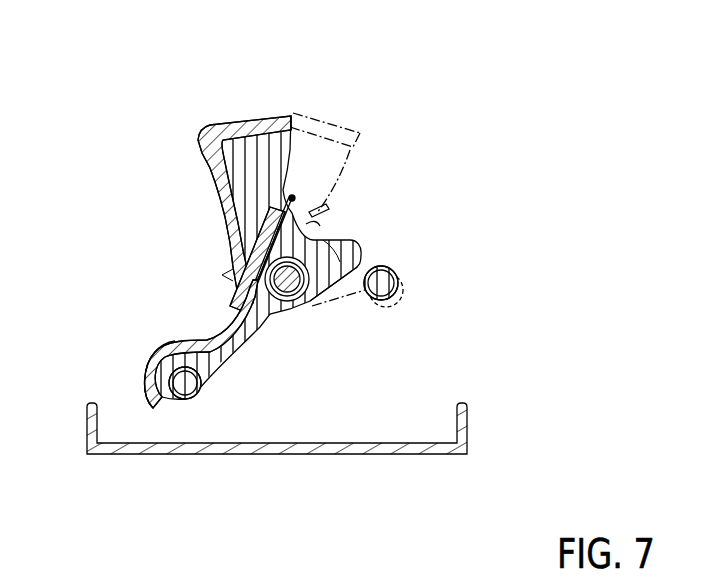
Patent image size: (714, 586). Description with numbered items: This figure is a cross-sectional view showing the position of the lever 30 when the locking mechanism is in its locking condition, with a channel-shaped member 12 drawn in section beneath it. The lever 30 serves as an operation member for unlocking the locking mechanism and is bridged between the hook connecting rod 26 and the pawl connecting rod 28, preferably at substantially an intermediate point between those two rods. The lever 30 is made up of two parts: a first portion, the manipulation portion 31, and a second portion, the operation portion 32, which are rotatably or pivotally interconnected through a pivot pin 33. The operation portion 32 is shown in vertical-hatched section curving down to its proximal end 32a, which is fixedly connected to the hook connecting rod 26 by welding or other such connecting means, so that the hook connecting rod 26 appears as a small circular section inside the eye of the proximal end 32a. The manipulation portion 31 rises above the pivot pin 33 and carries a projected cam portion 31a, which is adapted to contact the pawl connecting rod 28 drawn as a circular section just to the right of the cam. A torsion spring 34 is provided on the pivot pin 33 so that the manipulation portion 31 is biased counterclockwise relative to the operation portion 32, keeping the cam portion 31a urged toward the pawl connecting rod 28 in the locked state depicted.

The base frame 12 is at (266, 455).
The hook connecting rod 26 is at (181, 400).
The pawl connecting rod 28 is at (397, 278).
The lever 30 is at (245, 212).
The manipulation portion 31 is at (322, 162).
The projected cam portion 31a is at (345, 238).
The operation portion 32 is at (199, 331).
The proximal end 32a is at (145, 376).
The pivot pin 33 is at (282, 302).
The torsion spring 34 is at (223, 226).